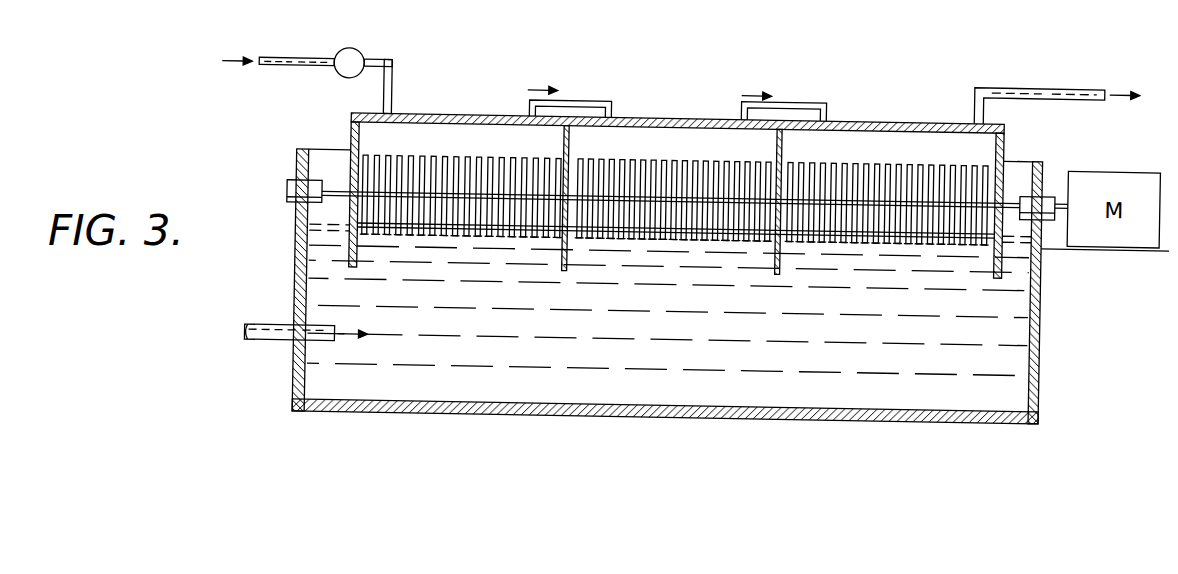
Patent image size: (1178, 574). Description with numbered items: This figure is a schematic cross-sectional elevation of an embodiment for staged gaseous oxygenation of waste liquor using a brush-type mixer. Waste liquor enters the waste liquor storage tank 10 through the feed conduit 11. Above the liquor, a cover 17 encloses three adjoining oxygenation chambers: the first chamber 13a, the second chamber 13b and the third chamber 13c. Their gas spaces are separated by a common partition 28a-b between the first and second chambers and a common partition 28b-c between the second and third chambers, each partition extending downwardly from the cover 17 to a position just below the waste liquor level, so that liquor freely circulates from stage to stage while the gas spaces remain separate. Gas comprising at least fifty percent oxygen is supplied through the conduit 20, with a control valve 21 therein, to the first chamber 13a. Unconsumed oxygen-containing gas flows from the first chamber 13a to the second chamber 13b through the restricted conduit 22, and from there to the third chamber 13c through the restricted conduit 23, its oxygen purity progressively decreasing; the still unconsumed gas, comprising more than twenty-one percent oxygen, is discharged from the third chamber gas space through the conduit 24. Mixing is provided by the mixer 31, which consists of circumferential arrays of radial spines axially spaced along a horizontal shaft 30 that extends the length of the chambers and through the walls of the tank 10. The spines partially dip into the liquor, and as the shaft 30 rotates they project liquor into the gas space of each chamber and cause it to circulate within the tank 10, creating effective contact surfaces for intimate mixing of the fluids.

The waste liquor storage tank 10 is at (354, 411).
The waste liquor feed conduit 11 is at (277, 325).
The first oxygenation chamber 13a is at (462, 160).
The second oxygenation chamber 13b is at (706, 130).
The third oxygenation chamber 13c is at (926, 131).
The cover 17 is at (506, 113).
The oxygen supply conduit 20 is at (297, 57).
The control valve 21 is at (349, 46).
The restricted conduit 22 is at (565, 95).
The restricted conduit 23 is at (771, 94).
The gas discharge conduit 24 is at (1075, 76).
The common partition 28a-b is at (568, 142).
The common partition 28b-c is at (781, 137).
The horizontal shaft 30 is at (1059, 190).
The brush-type mixer 31 is at (432, 158).